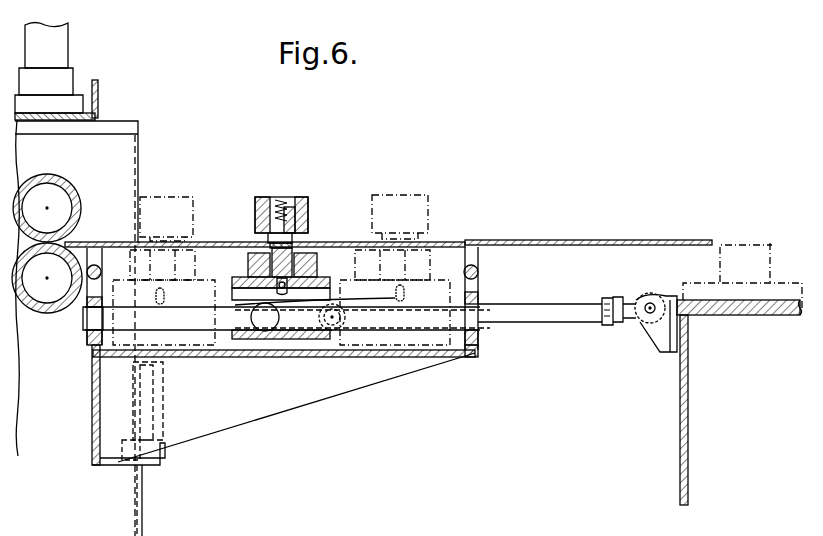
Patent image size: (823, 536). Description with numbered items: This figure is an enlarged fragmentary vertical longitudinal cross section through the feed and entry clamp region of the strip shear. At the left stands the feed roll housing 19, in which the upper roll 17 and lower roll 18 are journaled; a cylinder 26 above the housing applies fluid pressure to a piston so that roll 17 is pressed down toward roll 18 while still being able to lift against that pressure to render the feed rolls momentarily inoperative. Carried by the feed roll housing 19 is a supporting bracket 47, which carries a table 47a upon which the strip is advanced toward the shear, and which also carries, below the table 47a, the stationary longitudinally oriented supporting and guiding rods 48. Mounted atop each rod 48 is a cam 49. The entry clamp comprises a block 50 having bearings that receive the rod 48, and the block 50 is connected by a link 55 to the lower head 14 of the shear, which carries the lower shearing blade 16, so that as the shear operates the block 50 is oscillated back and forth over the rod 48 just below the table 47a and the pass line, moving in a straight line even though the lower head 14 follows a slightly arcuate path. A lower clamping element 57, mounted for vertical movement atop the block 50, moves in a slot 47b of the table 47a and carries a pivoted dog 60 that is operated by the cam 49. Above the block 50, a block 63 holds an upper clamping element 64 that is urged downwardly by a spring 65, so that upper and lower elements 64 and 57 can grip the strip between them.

The lower head 14 is at (680, 380).
The lower shearing blade 16 is at (773, 255).
The roll 17 is at (62, 176).
The roll 18 is at (40, 310).
The feed roll housing 19 is at (138, 120).
The cylinders 26 is at (62, 48).
The supporting bracket 47 is at (225, 425).
The table 47a is at (523, 213).
The slots or openings 47b is at (242, 218).
The supporting and guiding rods 48 is at (190, 320).
The cam 49 is at (378, 293).
The block 50 is at (277, 340).
The links 55 is at (537, 322).
The lower clamping element 57 is at (287, 257).
The dog 60 is at (290, 293).
The block 63 is at (308, 202).
The upper clamping element 64 is at (290, 223).
The spring 65 is at (280, 203).